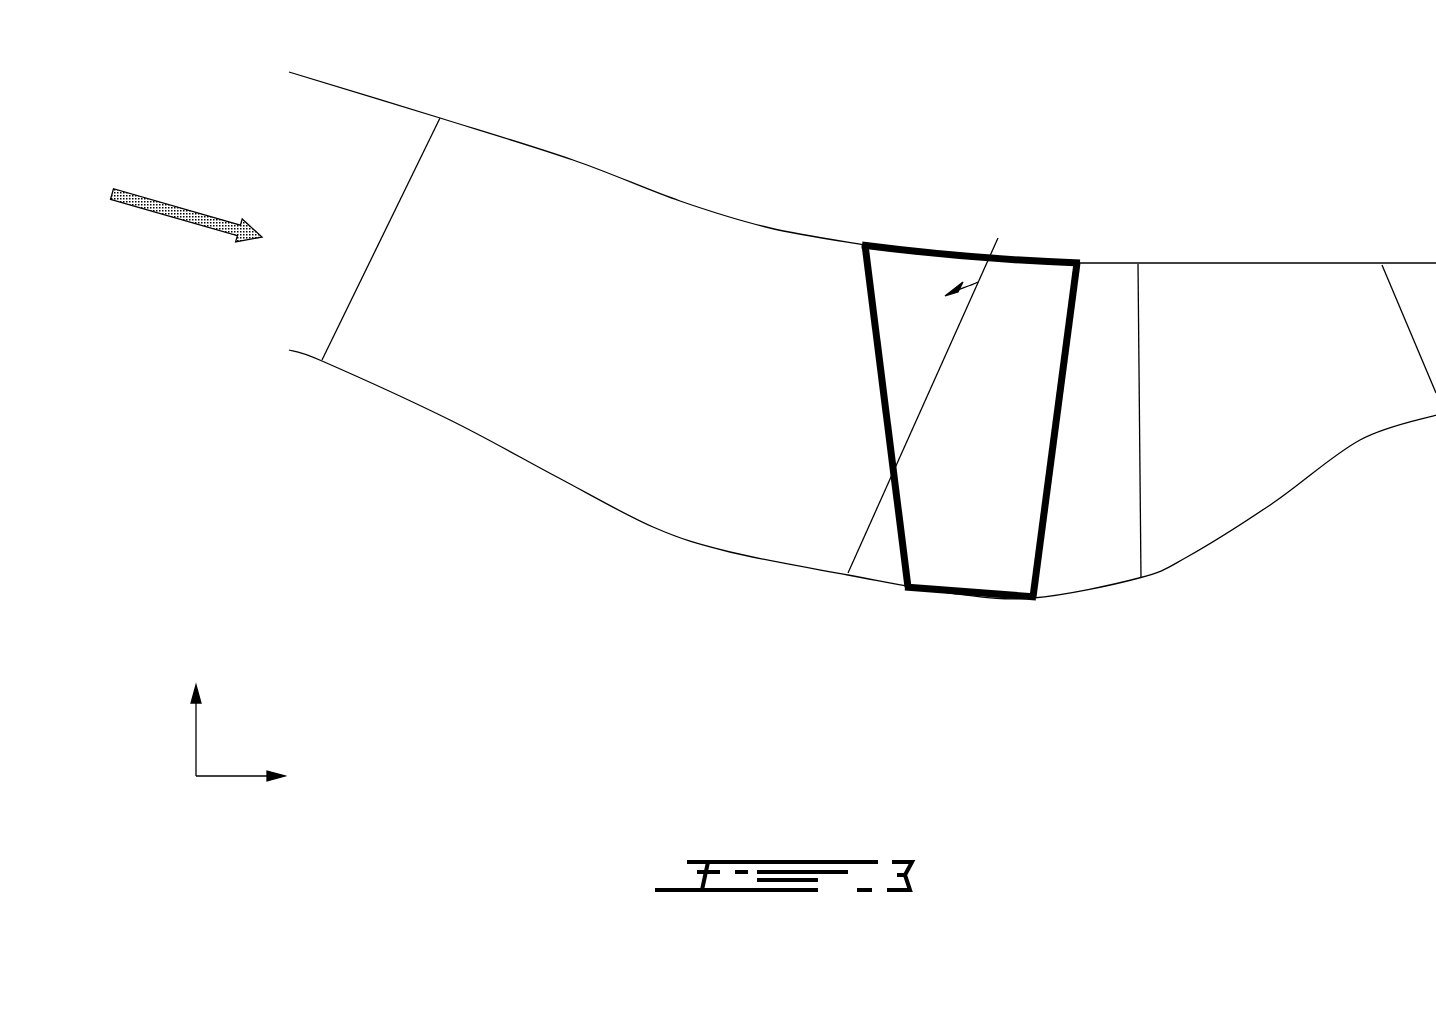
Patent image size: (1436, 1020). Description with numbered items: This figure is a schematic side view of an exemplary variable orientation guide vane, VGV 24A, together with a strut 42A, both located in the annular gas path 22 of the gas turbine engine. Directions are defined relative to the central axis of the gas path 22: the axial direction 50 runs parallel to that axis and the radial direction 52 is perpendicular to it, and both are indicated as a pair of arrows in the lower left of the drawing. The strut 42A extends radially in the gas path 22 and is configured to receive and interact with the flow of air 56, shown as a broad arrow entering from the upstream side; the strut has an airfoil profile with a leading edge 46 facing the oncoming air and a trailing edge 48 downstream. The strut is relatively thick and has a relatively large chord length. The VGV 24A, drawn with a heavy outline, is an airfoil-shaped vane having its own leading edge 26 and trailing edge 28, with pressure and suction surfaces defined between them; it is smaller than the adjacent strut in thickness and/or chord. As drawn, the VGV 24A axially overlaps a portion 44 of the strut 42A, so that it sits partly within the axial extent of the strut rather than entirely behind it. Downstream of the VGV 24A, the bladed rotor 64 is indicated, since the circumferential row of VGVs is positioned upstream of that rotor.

The annular gas path 22 is at (862, 335).
The strut 42A is at (573, 160).
The variable orientation guide vane 24A is at (982, 426).
The portion of strut 44 is at (998, 238).
The leading edge 46 is at (343, 312).
The trailing edge 48 is at (853, 557).
The leading edge 26 is at (900, 567).
The trailing edge 28 is at (1047, 535).
The bladed rotor 64 is at (1290, 442).
The radial direction 52 is at (196, 728).
The axial direction 50 is at (226, 777).
The flow of air 56 is at (162, 207).